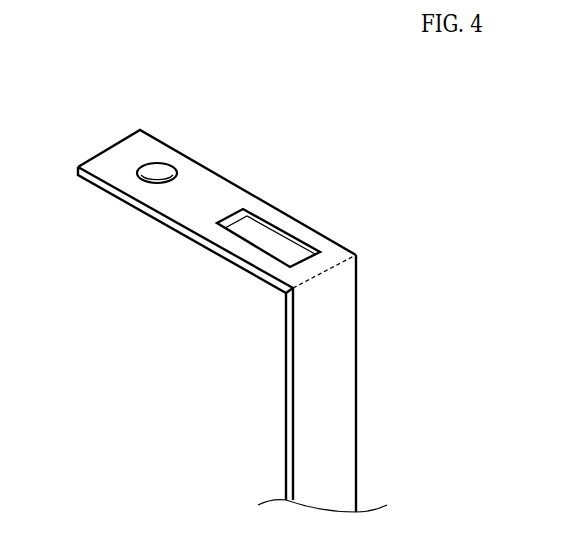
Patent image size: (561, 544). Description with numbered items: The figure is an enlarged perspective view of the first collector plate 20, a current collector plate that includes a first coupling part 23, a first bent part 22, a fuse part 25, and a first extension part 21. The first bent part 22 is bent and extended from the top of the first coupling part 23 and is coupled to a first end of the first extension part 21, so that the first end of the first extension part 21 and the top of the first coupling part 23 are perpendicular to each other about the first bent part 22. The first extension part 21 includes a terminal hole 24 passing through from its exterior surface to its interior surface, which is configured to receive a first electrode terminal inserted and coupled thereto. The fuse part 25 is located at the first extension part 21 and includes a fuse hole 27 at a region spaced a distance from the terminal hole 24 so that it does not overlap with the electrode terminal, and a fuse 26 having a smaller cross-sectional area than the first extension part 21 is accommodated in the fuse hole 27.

The first collector plate 20 is at (95, 138).
The first extension part 21 is at (205, 185).
The first bent part 22 is at (325, 275).
The first coupling part 23 is at (333, 383).
The terminal hole 24 is at (156, 172).
The fuse part 25 is at (386, 171).
The fuse 26 is at (310, 233).
The fuse hole 27 is at (257, 236).